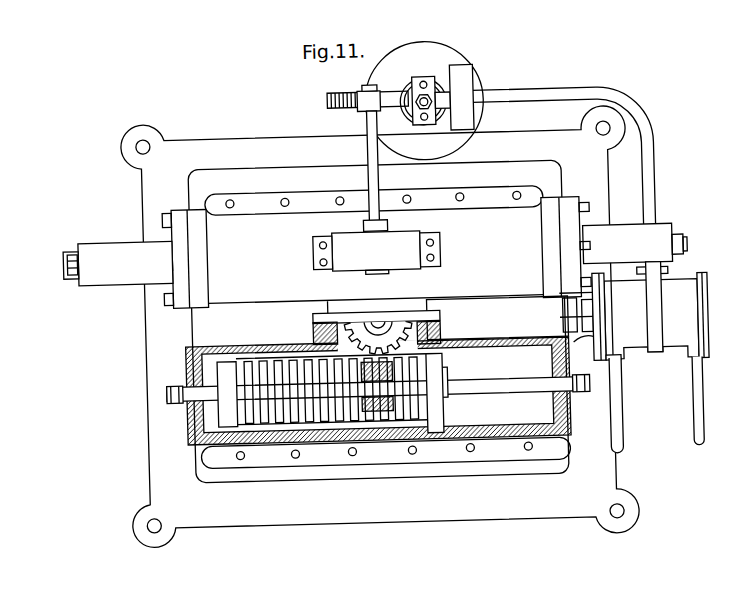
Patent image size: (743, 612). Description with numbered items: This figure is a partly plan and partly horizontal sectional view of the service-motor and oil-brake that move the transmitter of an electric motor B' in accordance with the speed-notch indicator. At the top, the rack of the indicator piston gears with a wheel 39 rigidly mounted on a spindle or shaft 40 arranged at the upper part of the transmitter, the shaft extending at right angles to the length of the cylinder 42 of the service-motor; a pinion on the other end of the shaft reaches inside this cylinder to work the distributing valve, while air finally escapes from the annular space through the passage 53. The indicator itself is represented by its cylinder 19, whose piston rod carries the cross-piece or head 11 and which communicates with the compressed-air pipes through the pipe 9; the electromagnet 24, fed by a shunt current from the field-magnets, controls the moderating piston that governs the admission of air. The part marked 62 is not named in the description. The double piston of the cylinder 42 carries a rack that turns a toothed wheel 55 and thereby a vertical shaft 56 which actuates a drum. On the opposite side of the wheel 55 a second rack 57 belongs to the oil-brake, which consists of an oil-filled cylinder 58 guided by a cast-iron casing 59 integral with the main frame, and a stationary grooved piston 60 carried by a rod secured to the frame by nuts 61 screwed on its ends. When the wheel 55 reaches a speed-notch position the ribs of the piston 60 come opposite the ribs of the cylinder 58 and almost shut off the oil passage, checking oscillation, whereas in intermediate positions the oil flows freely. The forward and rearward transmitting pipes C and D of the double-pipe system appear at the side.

The pipe 9 is at (645, 164).
The cross-piece or head 11 is at (424, 81).
The cylinder 19 is at (408, 121).
The electromagnet 24 is at (469, 82).
The wheel 39 is at (333, 99).
The spindle or shaft 40 is at (374, 150).
The cylinder 42 is at (316, 290).
The passage 53 is at (400, 197).
The wheel 55 is at (324, 341).
The vertical shaft 56 is at (437, 335).
The rack 57 is at (251, 352).
The cylinder 58 is at (224, 414).
The casing 59 is at (319, 432).
The stationary piston 60 is at (438, 424).
The nuts 61 is at (178, 388).
The end plate 62 is at (492, 196).
The electric motor B' is at (380, 335).
The main forward-motion-transmitting pipe C is at (616, 403).
The main rearward-motion-transmitting pipe D is at (694, 415).